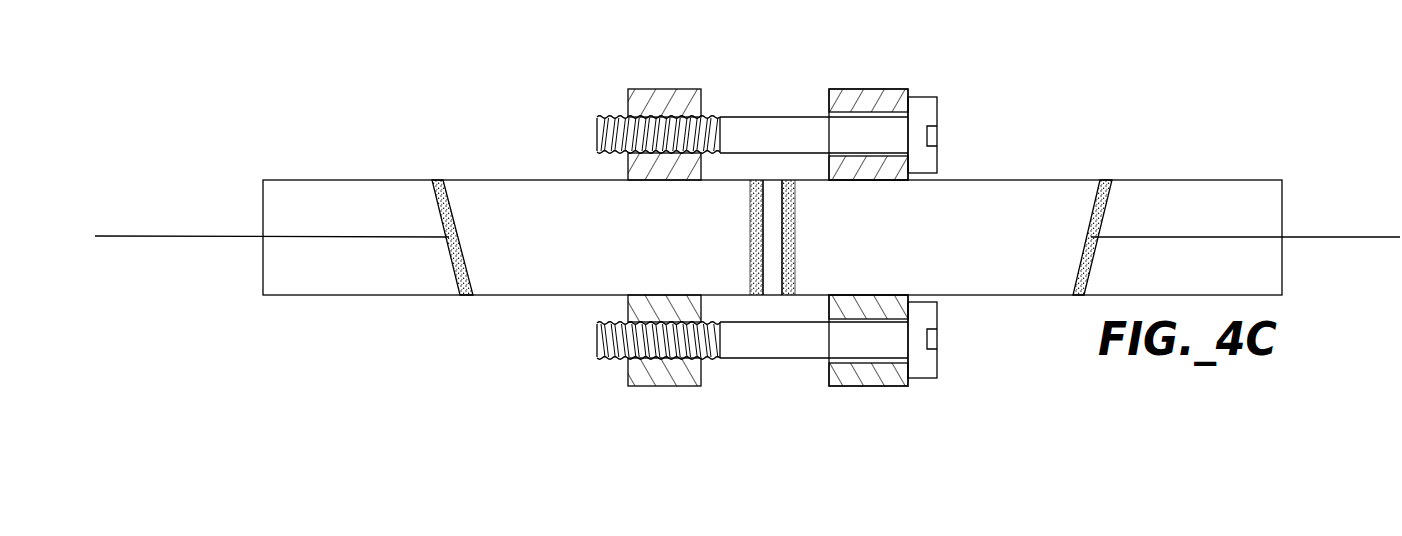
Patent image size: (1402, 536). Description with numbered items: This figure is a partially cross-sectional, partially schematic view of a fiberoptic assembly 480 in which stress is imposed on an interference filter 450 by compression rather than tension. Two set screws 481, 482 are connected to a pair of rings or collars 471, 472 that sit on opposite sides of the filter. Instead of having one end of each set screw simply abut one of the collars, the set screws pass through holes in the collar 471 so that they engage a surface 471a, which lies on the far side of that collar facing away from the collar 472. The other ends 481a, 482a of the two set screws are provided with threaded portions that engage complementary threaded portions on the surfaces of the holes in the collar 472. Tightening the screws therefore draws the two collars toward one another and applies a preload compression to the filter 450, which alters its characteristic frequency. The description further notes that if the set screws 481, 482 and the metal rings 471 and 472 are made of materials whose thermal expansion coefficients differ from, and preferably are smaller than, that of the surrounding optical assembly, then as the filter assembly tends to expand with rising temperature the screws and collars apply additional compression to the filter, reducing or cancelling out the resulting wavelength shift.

The interference filter 450 is at (771, 285).
The fiberoptic assembly 480 is at (723, 72).
The set screw 481 is at (767, 117).
The threaded end of set screw 481a is at (612, 118).
The collar 471 is at (878, 89).
The surface of collar 471a is at (908, 96).
The collar 472 is at (642, 385).
The set screw 482 is at (748, 358).
The threaded end of set screw 482a is at (608, 320).